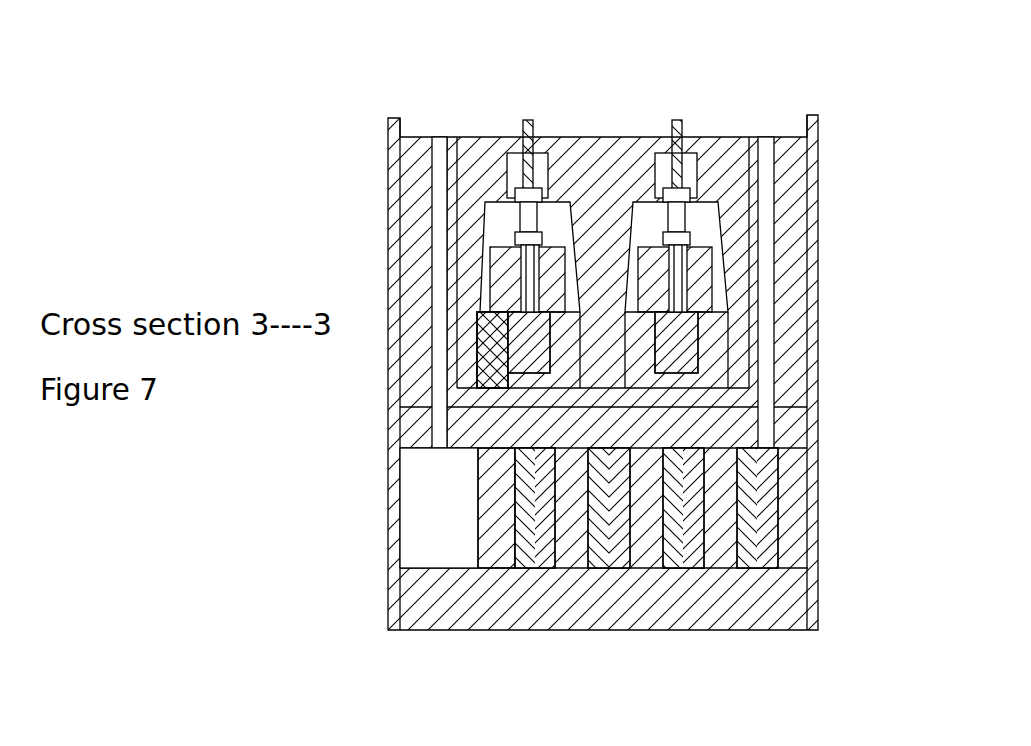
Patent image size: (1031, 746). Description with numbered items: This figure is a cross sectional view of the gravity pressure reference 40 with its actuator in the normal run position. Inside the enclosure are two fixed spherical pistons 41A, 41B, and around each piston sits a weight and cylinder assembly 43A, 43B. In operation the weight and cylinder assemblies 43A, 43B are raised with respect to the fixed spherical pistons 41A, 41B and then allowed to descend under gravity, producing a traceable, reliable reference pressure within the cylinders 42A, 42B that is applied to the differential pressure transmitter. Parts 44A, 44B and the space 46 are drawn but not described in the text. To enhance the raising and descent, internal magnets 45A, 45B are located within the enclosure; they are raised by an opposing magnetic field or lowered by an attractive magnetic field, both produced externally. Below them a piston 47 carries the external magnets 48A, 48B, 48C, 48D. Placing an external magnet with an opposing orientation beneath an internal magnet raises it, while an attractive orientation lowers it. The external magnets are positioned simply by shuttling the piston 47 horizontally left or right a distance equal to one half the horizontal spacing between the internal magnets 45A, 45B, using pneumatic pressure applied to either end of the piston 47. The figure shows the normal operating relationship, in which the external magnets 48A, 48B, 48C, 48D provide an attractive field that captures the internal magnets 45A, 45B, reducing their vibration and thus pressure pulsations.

The gravity pressure reference 40 is at (190, 105).
The fixed spherical piston 41A is at (602, 164).
The fixed spherical piston 41B is at (753, 164).
The cylinder 42A is at (415, 136).
The cylinder 42B is at (794, 129).
The weight and cylinder assembly 43A is at (492, 225).
The weight and cylinder assembly 43B is at (725, 216).
The pin holder 44A is at (490, 292).
The pin holder 44B is at (700, 282).
The internal magnet 45A is at (482, 377).
The internal magnet 45B is at (698, 343).
The recess 46 is at (435, 488).
The piston 47 is at (487, 510).
The external magnet 48A is at (579, 562).
The external magnet 48B is at (660, 562).
The external magnet 48C is at (745, 564).
The external magnet 48D is at (782, 560).